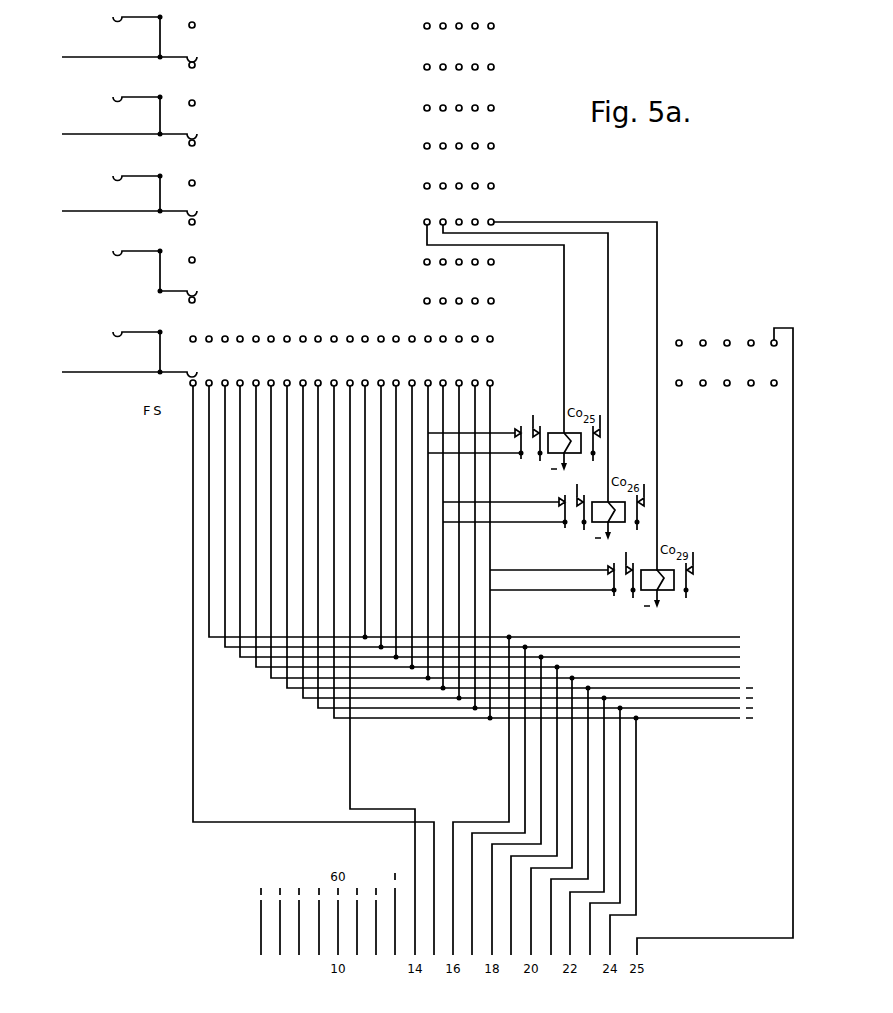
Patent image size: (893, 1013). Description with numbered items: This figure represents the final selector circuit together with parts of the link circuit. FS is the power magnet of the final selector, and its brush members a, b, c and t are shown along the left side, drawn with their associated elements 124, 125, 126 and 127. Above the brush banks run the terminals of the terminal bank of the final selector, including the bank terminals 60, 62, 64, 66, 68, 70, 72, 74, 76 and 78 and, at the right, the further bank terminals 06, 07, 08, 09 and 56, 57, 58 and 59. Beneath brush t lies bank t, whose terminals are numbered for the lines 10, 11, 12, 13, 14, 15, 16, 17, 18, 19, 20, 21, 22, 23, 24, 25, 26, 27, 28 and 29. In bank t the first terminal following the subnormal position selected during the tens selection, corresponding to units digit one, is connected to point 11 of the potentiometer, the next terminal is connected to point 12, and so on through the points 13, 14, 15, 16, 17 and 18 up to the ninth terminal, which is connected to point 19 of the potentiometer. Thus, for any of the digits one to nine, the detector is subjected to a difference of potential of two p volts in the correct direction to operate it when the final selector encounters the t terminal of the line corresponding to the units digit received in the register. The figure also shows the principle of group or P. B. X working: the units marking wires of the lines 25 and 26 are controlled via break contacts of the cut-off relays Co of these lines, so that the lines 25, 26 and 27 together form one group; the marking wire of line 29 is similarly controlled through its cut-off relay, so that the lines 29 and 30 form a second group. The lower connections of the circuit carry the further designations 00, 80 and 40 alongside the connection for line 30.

The relay 124 with contact a 124 is at (115, 42).
The relay 125 with contact b 125 is at (115, 121).
The relay 126 with contact c 126 is at (115, 200).
The relay 127 with contact t 127 is at (115, 355).
The terminal 10 is at (309, 658).
The potentiometer point 11 is at (471, 502).
The potentiometer point 12 is at (481, 513).
The potentiometer point 13 is at (486, 511).
The potentiometer point 14 is at (496, 523).
The potentiometer point 15 is at (501, 522).
The potentiometer point 16 is at (518, 534).
The potentiometer point 17 is at (524, 532).
The potentiometer point 18 is at (534, 544).
The potentiometer point 19 is at (539, 542).
The terminal 20 is at (381, 667).
The terminal 21 is at (364, 503).
The terminal 22 is at (381, 515).
The terminal 23 is at (395, 513).
The terminal 24 is at (412, 525).
The line 25 is at (470, 523).
The line 26 is at (502, 535).
The line 27 is at (458, 533).
The terminal 28 is at (475, 545).
The line 29 is at (548, 543).
The contact terminal 60 is at (193, 333).
The contact terminal 62 is at (225, 333).
The contact terminal 64 is at (256, 333).
The contact terminal 66 is at (287, 333).
The contact terminal 68 is at (318, 333).
The contact terminal 70 is at (350, 333).
The contact terminal 72 is at (381, 333).
The contact terminal 74 is at (412, 333).
The contact terminal 76 is at (443, 333).
The contact terminal 78 is at (475, 333).
The contact terminal 06 is at (678, 335).
The contact terminal 07 is at (702, 335).
The contact terminal 08 is at (726, 335).
The contact terminal 09 is at (750, 335).
The contact terminal 56 is at (678, 375).
The contact terminal 57 is at (702, 375).
The contact terminal 58 is at (726, 375).
The contact terminal 59 is at (750, 375).
The output line 00 is at (260, 923).
The output line 80 is at (298, 923).
The output line 40 is at (375, 923).
The line 30 is at (394, 905).